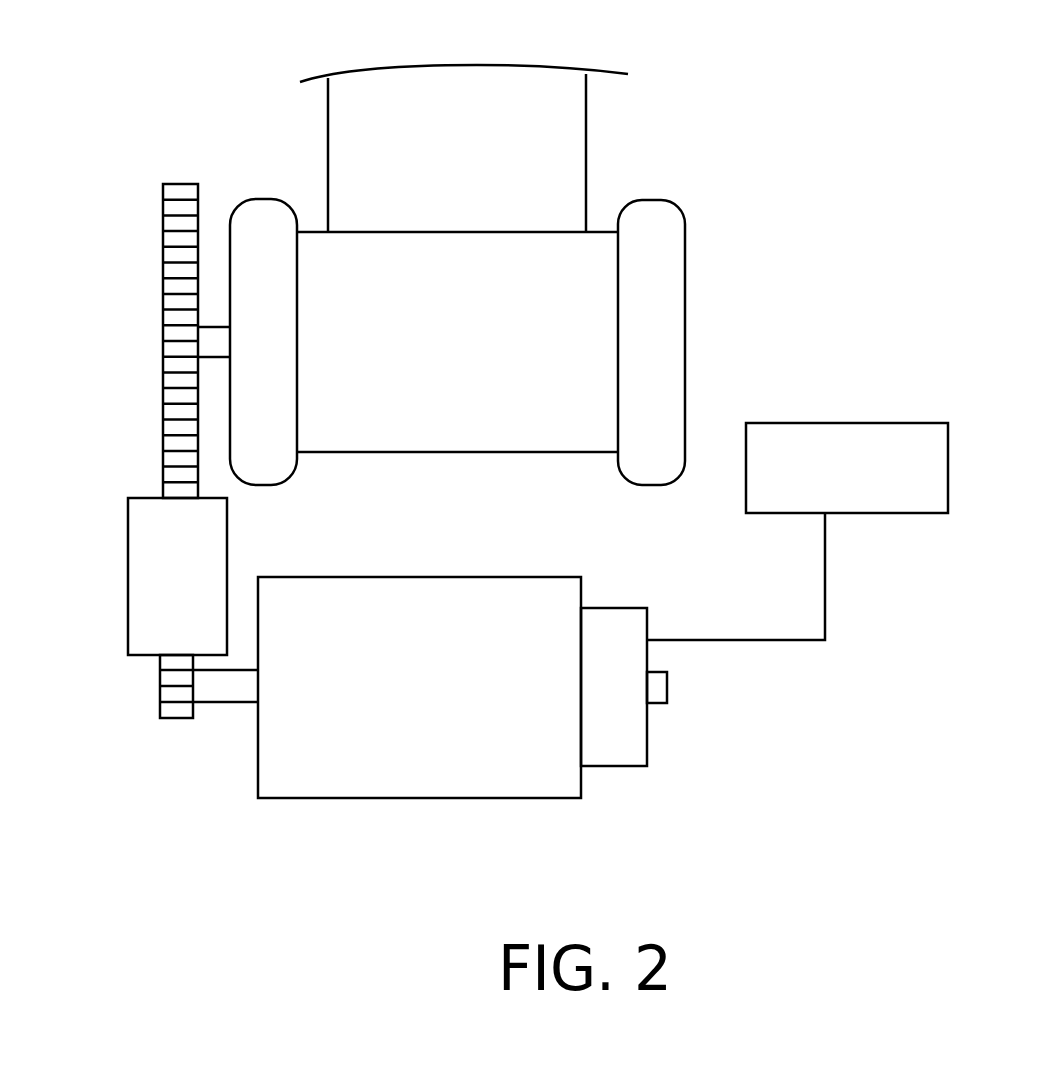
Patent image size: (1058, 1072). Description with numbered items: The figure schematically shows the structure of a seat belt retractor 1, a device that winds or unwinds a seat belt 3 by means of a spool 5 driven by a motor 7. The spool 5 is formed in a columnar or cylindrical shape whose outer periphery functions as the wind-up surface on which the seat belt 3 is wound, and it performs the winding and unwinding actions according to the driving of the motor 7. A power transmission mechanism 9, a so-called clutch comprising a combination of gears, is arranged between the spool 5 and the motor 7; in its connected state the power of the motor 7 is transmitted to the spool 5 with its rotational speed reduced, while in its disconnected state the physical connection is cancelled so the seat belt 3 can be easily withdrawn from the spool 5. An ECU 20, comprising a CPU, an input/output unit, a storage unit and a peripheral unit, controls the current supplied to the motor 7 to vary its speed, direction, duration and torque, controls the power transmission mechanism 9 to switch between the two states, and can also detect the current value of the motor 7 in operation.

The seat belt retractor 1 is at (215, 105).
The seat belt 3 is at (518, 110).
The spool 5 is at (582, 258).
The motor 7 is at (422, 782).
The power transmission mechanism 9 is at (126, 539).
The ECU 20 is at (894, 419).